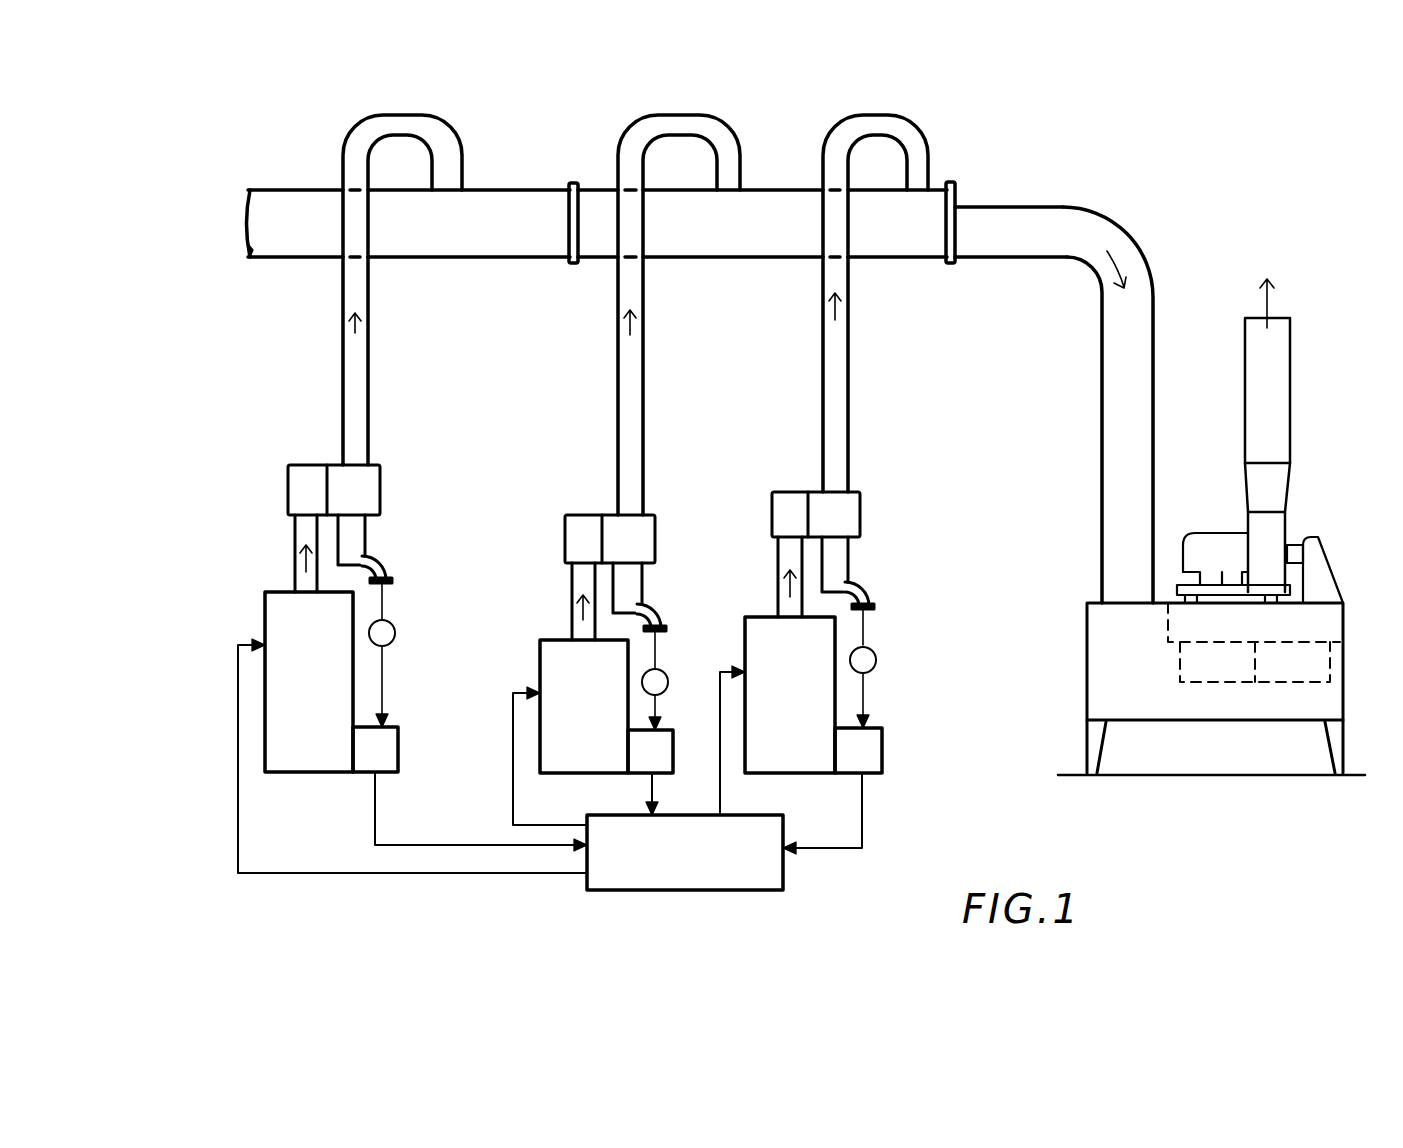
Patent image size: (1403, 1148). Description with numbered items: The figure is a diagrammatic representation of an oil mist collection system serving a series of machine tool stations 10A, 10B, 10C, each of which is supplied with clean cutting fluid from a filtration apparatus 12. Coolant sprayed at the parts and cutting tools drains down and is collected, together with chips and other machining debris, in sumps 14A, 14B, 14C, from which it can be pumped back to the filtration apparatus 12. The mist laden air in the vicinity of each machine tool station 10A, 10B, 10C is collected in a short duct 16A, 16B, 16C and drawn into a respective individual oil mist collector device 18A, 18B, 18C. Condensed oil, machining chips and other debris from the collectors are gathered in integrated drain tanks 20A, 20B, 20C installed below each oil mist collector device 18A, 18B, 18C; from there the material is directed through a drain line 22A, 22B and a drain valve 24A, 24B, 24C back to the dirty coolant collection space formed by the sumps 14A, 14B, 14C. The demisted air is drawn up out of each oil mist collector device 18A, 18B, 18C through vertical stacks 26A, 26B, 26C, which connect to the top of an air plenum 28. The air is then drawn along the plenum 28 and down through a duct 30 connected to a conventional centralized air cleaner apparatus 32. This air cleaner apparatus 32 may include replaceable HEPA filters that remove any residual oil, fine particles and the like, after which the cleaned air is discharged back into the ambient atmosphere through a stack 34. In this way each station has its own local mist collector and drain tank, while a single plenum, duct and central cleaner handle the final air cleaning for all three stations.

The machine tool station 10A is at (256, 608).
The machine tool station 10B is at (531, 640).
The machine tool station 10C is at (752, 604).
The filtration apparatus 12 is at (757, 815).
The sump 14A is at (392, 755).
The sump 14B is at (640, 753).
The sump 14C is at (873, 760).
The short duct 16A is at (292, 530).
The short duct 16B is at (568, 583).
The short duct 16C is at (775, 553).
The oil mist collector device 18A is at (380, 457).
The oil mist collector device 18B is at (577, 504).
The oil mist collector device 18C is at (862, 484).
The integrated drain tank 20A is at (368, 540).
The integrated drain tank 20B is at (645, 575).
The integrated drain tank 20C is at (850, 557).
The drain line 22A is at (383, 607).
The drain line 22B is at (657, 645).
The drain valve 24A is at (393, 642).
The drain valve 24B is at (667, 690).
The drain valve 24C is at (877, 660).
The vertical stack 26A is at (362, 290).
The vertical stack 26B is at (644, 279).
The vertical stack 26C is at (850, 281).
The air plenum 28 is at (483, 204).
The duct 30 is at (1103, 298).
The centralized air cleaner apparatus 32 is at (1300, 508).
The stack 34 is at (1248, 350).